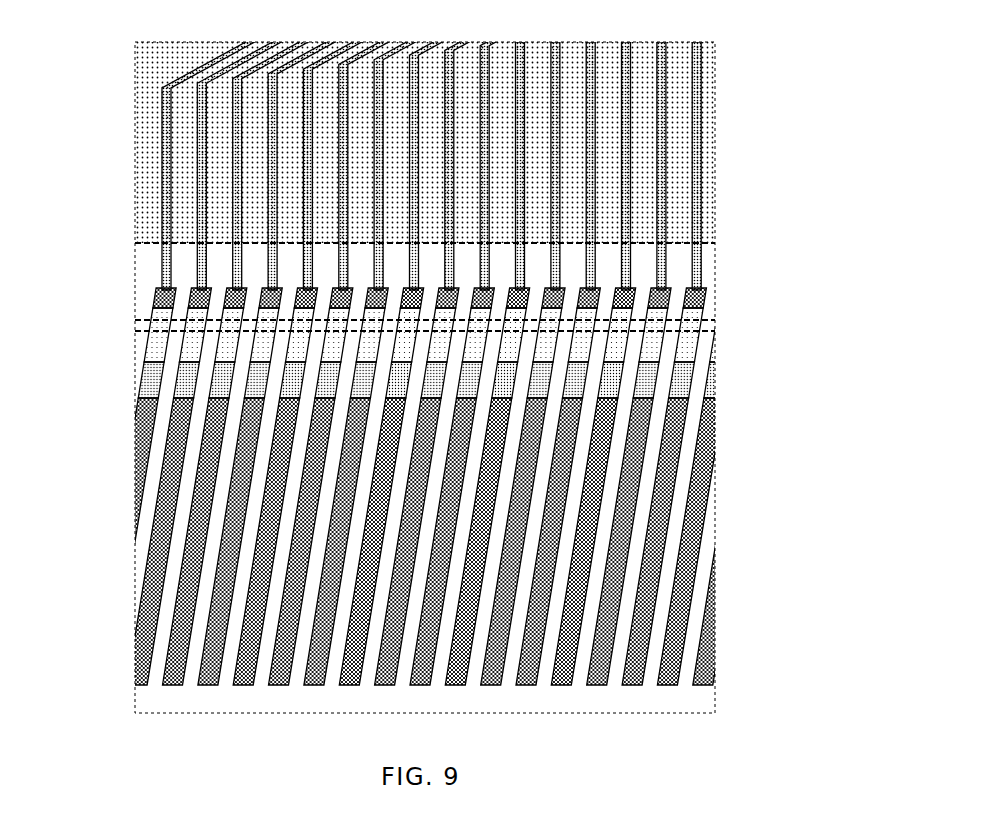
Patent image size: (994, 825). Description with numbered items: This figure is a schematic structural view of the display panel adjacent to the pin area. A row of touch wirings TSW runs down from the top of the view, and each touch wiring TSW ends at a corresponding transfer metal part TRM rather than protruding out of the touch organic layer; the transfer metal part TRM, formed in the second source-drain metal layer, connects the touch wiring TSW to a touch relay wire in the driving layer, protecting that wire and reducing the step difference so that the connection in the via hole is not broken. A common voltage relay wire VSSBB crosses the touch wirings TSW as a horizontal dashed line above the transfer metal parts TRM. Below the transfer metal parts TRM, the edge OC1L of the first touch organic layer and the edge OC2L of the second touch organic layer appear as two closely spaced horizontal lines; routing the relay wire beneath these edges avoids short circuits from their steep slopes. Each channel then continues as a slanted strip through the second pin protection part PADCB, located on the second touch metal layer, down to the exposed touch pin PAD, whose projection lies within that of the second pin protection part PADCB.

The touch wiring TSW is at (708, 176).
The common voltage relay wire VSSBB is at (710, 221).
The transfer metal part TRM is at (705, 296).
The edge of the first touch organic layer OC1L is at (148, 319).
The edge of the second touch organic layer OC2L is at (148, 333).
The second pin protection part PADCB is at (690, 386).
The touch pin PAD is at (716, 490).